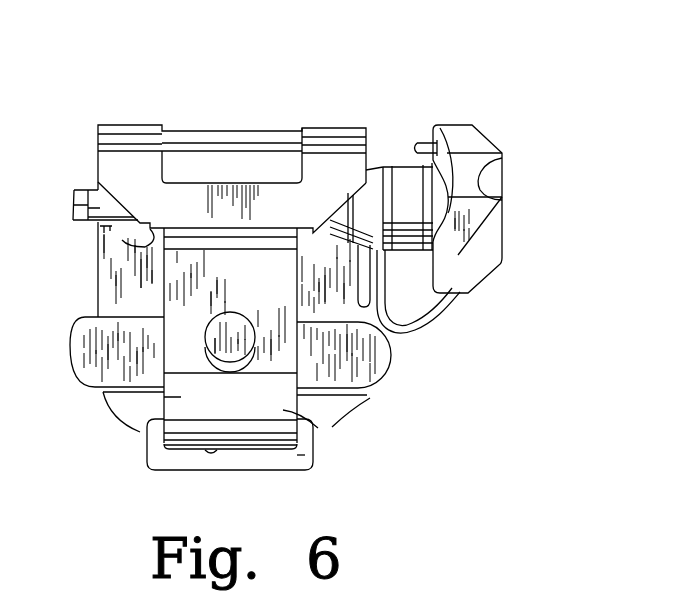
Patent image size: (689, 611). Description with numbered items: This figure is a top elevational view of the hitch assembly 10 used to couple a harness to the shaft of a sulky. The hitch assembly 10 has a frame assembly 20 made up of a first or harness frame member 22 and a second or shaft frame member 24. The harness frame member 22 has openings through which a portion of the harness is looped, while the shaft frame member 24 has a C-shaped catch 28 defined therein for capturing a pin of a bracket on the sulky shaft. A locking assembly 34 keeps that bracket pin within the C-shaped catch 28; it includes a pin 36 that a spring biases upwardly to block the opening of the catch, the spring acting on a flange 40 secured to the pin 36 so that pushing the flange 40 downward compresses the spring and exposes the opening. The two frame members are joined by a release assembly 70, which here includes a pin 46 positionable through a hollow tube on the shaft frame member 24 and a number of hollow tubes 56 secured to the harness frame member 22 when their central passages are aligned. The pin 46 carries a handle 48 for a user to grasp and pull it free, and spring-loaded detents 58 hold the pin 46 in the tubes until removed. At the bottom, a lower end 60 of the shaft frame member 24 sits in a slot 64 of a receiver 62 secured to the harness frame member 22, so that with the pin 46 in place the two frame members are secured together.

The hitch assembly 10 is at (487, 96).
The frame assembly 20 is at (320, 137).
The harness frame member 22 is at (132, 138).
The shaft frame member 24 is at (332, 430).
The C-shaped catch 28 is at (193, 414).
The locking assembly 34 is at (195, 358).
The pin 36 is at (245, 325).
The flange 40 is at (383, 357).
The pin 46 is at (88, 200).
The handle 48 is at (473, 135).
The hollow tubes 56 is at (120, 240).
The spring-loaded detents 58 is at (97, 224).
The lower end 60 is at (313, 463).
The receiver 62 is at (286, 462).
The slot 64 is at (217, 455).
The release assembly 70 is at (383, 121).